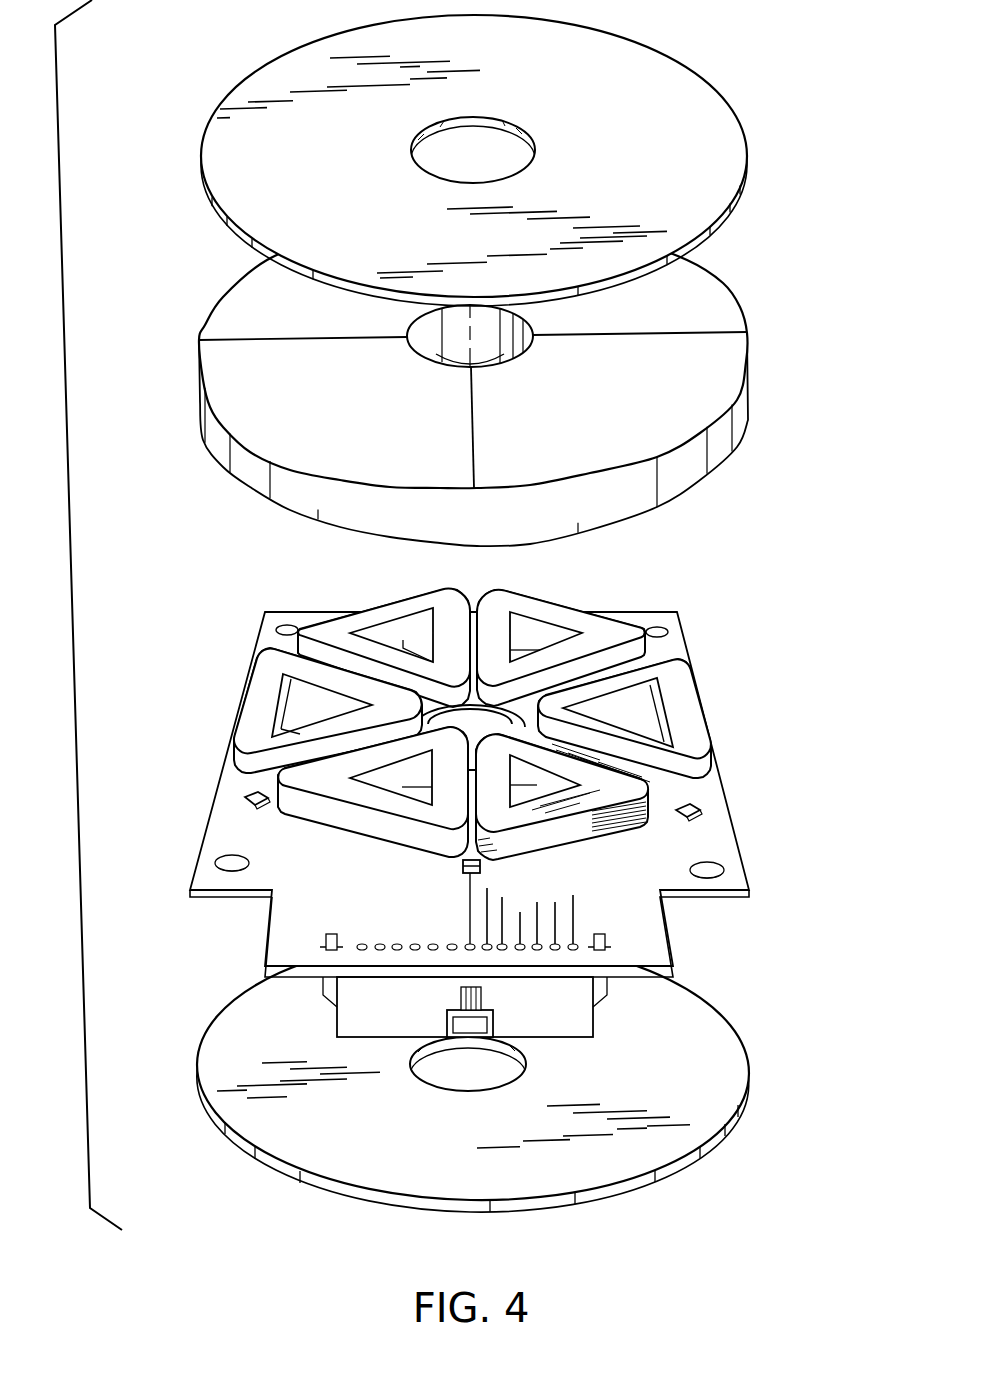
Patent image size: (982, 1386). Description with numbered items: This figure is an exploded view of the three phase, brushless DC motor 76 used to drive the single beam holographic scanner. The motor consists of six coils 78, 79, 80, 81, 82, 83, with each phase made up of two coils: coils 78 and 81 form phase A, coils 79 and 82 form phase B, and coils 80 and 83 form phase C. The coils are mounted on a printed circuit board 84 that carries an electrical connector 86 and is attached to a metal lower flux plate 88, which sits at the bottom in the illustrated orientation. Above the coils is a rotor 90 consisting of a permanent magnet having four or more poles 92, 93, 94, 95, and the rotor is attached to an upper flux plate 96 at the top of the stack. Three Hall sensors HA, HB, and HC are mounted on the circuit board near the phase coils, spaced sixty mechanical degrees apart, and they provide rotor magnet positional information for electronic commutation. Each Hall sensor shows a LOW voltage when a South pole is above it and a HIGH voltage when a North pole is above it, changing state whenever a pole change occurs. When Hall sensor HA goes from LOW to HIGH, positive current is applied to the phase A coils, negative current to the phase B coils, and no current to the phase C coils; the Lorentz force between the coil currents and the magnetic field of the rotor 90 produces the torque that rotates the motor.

The brushless DC motor 76 is at (160, 208).
The phase A coil 78 is at (563, 837).
The phase B coil 79 is at (403, 836).
The phase C coil 80 is at (257, 677).
The phase A coil 81 is at (362, 615).
The phase B coil 82 is at (533, 608).
The phase C coil 83 is at (688, 707).
The printed circuit board 84 is at (727, 852).
The electrical connector 86 is at (572, 1018).
The lower flux plate 88 is at (727, 1060).
The rotor 90 is at (515, 379).
The pole 92 is at (656, 397).
The pole 93 is at (273, 395).
The pole 94 is at (232, 328).
The pole 95 is at (669, 309).
The upper flux plate 96 is at (735, 141).
The Hall sensor HA is at (690, 808).
The Hall sensor HB is at (462, 867).
The Hall sensor HC is at (243, 791).